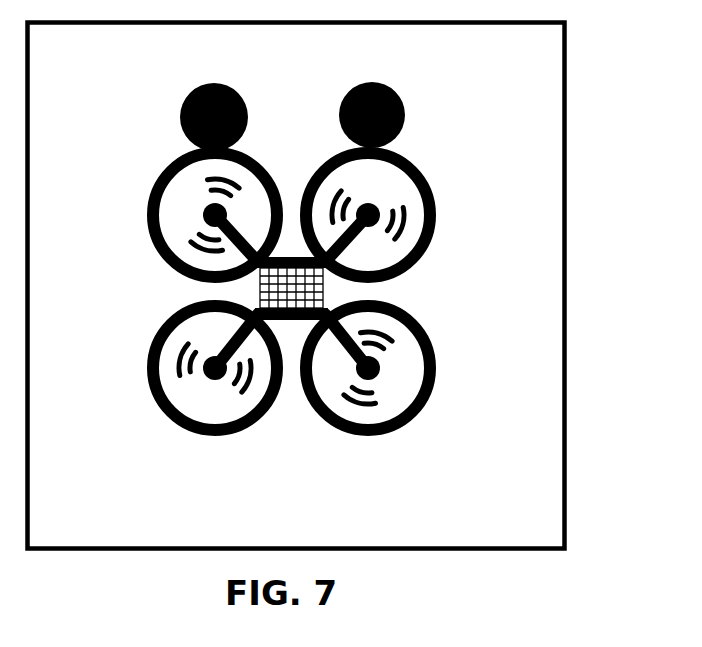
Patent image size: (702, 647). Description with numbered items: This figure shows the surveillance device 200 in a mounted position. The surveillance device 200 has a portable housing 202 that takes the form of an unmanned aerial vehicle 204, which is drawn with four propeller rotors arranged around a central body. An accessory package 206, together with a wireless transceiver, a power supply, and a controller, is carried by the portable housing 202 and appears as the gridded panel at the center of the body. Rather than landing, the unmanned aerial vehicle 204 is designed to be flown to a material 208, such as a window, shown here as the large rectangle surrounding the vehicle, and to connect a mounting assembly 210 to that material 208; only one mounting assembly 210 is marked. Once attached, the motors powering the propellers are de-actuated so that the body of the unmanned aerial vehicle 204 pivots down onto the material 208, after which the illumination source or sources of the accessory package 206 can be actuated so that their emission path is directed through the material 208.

The surveillance device 200 is at (340, 250).
The portable housing 202 is at (292, 320).
The unmanned aerial vehicle 204 is at (437, 207).
The accessory package 206 is at (323, 289).
The material 208 is at (565, 128).
The mounting assembly 210 is at (408, 118).